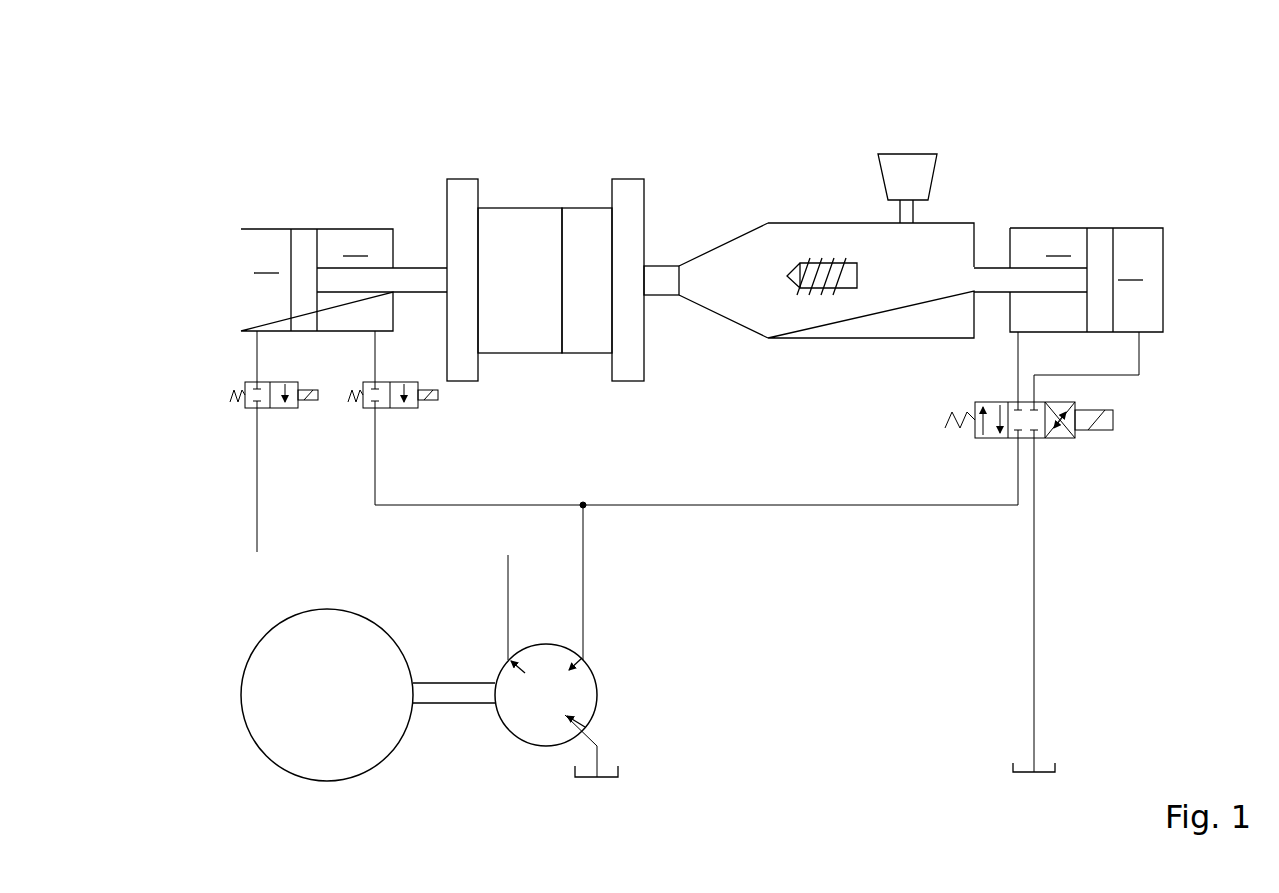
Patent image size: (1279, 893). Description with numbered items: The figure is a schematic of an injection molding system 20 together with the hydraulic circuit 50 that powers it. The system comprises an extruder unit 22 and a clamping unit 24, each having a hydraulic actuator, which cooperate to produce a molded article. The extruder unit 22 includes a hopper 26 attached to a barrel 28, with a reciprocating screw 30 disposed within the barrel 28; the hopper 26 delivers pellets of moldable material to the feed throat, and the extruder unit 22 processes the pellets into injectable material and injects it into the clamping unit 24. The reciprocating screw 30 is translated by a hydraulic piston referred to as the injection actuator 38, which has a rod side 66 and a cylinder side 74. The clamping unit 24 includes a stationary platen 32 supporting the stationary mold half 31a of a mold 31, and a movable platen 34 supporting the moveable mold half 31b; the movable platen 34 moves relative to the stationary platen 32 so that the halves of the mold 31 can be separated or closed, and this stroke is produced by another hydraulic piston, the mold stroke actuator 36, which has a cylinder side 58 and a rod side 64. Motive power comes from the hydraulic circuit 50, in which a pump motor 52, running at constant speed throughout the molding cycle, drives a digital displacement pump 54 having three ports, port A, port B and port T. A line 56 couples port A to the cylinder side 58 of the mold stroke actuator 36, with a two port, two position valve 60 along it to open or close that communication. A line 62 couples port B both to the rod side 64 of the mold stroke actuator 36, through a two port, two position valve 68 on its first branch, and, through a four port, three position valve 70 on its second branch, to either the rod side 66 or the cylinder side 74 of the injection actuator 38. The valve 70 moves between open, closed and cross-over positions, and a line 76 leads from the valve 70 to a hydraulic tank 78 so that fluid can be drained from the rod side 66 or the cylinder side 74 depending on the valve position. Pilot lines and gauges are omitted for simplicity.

The injection molding system 20 is at (154, 134).
The extruder unit 22 is at (805, 144).
The clamping unit 24 is at (414, 159).
The hopper 26 is at (920, 150).
The barrel 28 is at (800, 222).
The reciprocating screw 30 is at (842, 290).
The mold 31 is at (580, 140).
The stationary mold half 31a is at (576, 208).
The moveable mold half 31b is at (497, 208).
The stationary platen 32 is at (645, 338).
The movable platen 34 is at (478, 362).
The mold stroke actuator 36 is at (298, 229).
The injection actuator 38 is at (1098, 228).
The hydraulic circuit 50 is at (1178, 486).
The pump motor 52 is at (269, 639).
The digital displacement pump 54 is at (517, 741).
The line 56 is at (257, 507).
The cylinder side 58 is at (266, 263).
The valve 60 is at (246, 385).
The line 62 is at (478, 505).
The rod side 64 is at (355, 246).
The rod side 66 is at (1058, 246).
The valve 68 is at (365, 408).
The valve 70 is at (1010, 432).
The cylinder side 74 is at (1130, 270).
The line 76 is at (1034, 667).
The hydraulic tank 78 is at (1040, 778).